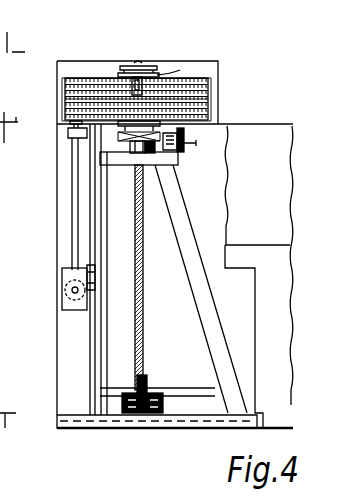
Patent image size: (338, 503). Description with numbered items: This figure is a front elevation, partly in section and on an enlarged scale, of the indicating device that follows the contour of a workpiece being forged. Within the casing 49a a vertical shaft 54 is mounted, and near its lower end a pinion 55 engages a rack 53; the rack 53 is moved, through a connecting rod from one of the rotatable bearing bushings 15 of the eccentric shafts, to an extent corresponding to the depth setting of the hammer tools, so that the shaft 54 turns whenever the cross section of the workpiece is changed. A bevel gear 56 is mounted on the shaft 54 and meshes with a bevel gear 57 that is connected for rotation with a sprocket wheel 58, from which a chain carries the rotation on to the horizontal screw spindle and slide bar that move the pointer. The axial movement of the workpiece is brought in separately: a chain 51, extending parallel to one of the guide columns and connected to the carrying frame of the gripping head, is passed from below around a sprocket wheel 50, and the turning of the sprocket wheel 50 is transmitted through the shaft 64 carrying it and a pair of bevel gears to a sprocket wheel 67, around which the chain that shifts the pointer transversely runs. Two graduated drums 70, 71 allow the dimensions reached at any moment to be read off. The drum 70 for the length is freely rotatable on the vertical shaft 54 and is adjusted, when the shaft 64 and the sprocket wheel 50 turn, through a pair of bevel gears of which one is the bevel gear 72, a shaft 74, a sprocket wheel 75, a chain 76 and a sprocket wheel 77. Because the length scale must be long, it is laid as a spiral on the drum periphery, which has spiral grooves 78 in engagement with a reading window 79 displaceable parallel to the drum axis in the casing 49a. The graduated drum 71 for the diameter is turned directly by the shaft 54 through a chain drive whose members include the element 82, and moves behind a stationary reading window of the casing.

The bearing bushing 15 is at (1, 402).
The casing 49a is at (266, 287).
The sprocket wheel 50 is at (0, 292).
The chain 51 is at (0, 241).
The rack 53 is at (163, 393).
The vertical shaft 54 is at (169, 75).
The pinion 55 is at (128, 417).
The bevel gear 56 is at (115, 137).
The bevel gear 57 is at (160, 153).
The sprocket wheel 58 is at (183, 147).
The shaft 64 is at (72, 293).
The sprocket wheel 67 is at (93, 277).
The graduated drum 70 is at (208, 80).
The graduated drum 71 is at (148, 67).
The bevel gear 72 is at (78, 298).
The shaft 74 is at (77, 188).
The sprocket wheel 75 is at (65, 127).
The chain 76 is at (88, 123).
The sprocket wheel 77 is at (147, 126).
The spiral grooves 78 is at (202, 97).
The reading window 79 is at (117, 90).
The chain drive element 82 is at (155, 75).